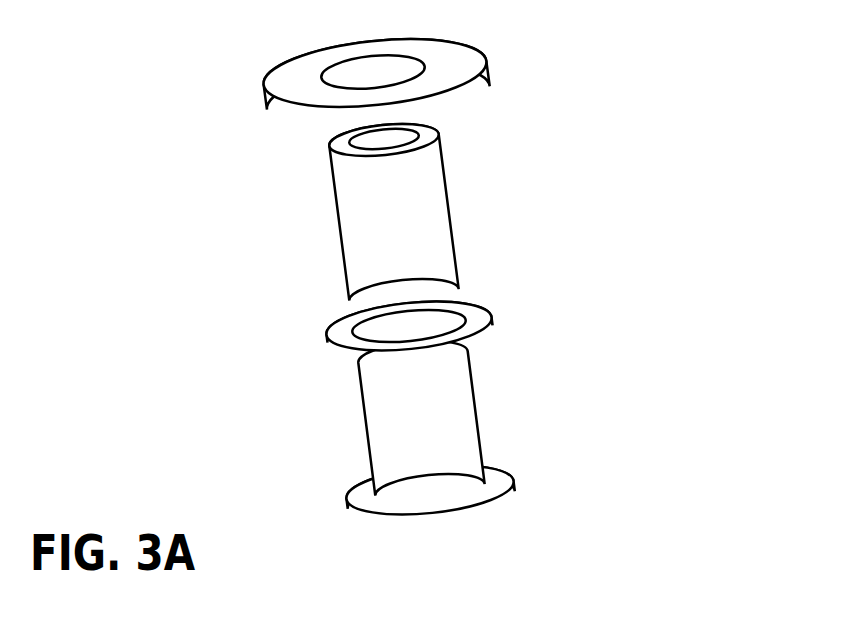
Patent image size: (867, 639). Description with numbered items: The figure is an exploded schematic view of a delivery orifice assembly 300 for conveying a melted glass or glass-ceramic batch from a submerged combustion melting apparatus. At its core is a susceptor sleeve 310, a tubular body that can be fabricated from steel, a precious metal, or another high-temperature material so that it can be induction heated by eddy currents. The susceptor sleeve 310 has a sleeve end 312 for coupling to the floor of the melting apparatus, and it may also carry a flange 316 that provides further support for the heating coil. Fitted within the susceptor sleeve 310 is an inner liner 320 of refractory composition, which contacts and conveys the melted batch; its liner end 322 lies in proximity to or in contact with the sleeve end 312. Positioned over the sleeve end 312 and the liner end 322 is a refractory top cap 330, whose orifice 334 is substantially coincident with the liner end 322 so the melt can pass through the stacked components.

The delivery orifice assembly 300 is at (471, 261).
The susceptor sleeve 310 is at (487, 440).
The sleeve end 312 is at (477, 318).
The flange 316 is at (360, 498).
The inner liner 320 is at (460, 250).
The liner end 322 is at (428, 133).
The top cap 330 is at (487, 43).
The orifice 334 is at (363, 80).